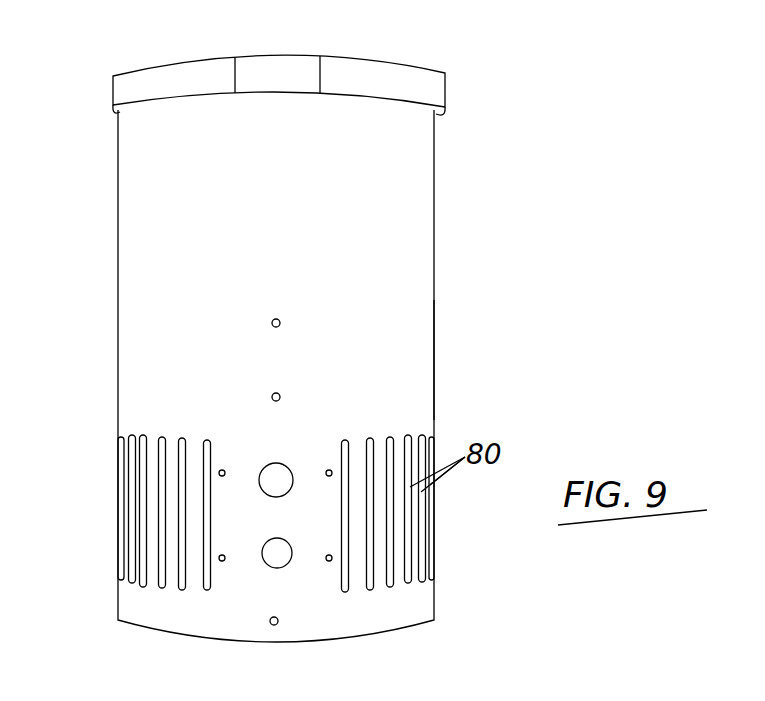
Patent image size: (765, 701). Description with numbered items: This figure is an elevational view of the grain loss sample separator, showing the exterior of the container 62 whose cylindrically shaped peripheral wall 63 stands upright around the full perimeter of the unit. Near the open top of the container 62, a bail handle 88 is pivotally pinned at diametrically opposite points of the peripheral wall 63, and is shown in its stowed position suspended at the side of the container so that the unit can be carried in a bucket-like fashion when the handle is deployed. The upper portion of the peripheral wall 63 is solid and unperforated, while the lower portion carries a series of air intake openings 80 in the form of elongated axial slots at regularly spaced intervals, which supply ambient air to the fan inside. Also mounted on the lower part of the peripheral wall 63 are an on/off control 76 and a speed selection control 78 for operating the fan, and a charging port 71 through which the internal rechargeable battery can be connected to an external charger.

The bail handle 88 is at (365, 82).
The container 62 is at (410, 293).
The peripheral wall 63 is at (420, 367).
The air intake openings 80 is at (212, 535).
The on/off control 76 is at (273, 477).
The speed selection control 78 is at (268, 557).
The charging port 71 is at (279, 620).